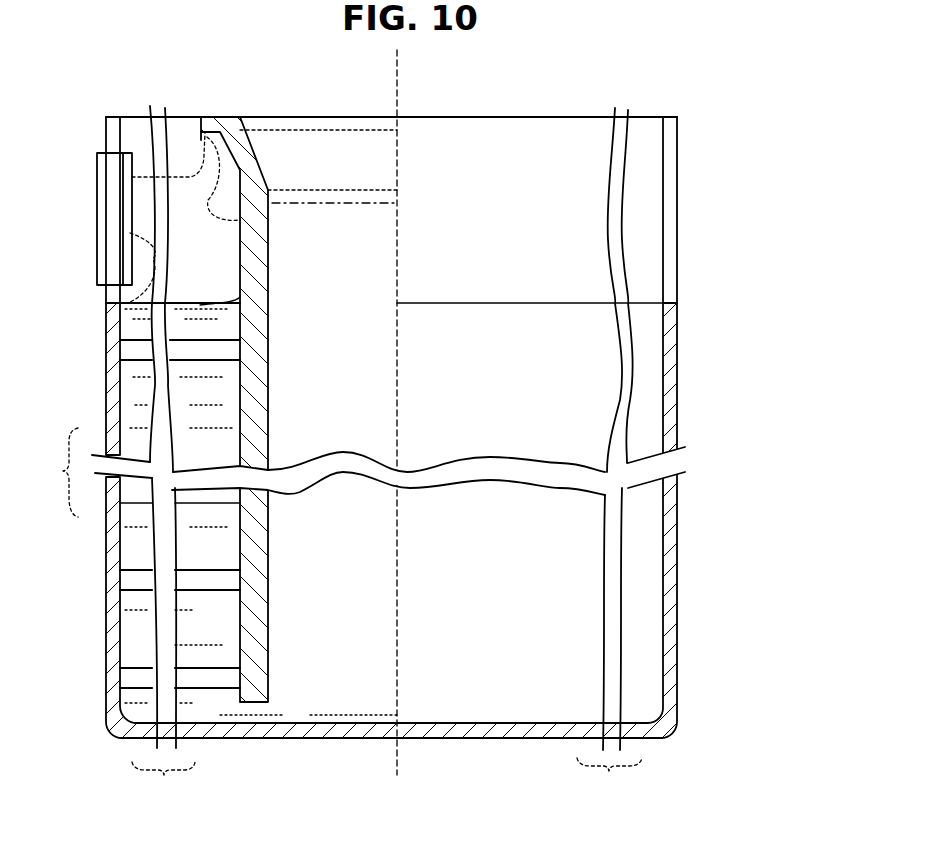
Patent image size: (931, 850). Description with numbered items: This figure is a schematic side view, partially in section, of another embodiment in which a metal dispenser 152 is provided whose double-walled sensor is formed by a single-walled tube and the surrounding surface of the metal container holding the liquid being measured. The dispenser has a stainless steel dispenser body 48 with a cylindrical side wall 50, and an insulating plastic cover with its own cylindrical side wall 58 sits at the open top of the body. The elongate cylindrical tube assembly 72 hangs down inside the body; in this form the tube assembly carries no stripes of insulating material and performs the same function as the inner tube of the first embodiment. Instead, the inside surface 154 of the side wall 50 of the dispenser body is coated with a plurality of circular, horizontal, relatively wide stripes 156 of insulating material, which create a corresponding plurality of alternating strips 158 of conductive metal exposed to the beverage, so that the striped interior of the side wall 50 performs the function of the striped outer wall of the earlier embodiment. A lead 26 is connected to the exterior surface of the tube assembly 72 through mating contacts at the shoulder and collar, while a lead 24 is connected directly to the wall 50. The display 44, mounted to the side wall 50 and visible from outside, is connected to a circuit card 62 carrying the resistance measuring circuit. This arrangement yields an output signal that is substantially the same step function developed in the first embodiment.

The metal dispenser 152 is at (712, 150).
The tube assembly 72 is at (229, 140).
The lead 26 is at (183, 170).
The circuit card 62 is at (120, 207).
The display 44 is at (97, 237).
The lead 24 is at (150, 263).
The cylindrical side wall 58 is at (680, 237).
The dispenser body 48 is at (672, 342).
The cylindrical side wall 50 is at (672, 546).
The inside surface 154 is at (137, 375).
The stripes of insulating material 156 is at (138, 420).
The strips of conductive metal 158 is at (147, 583).